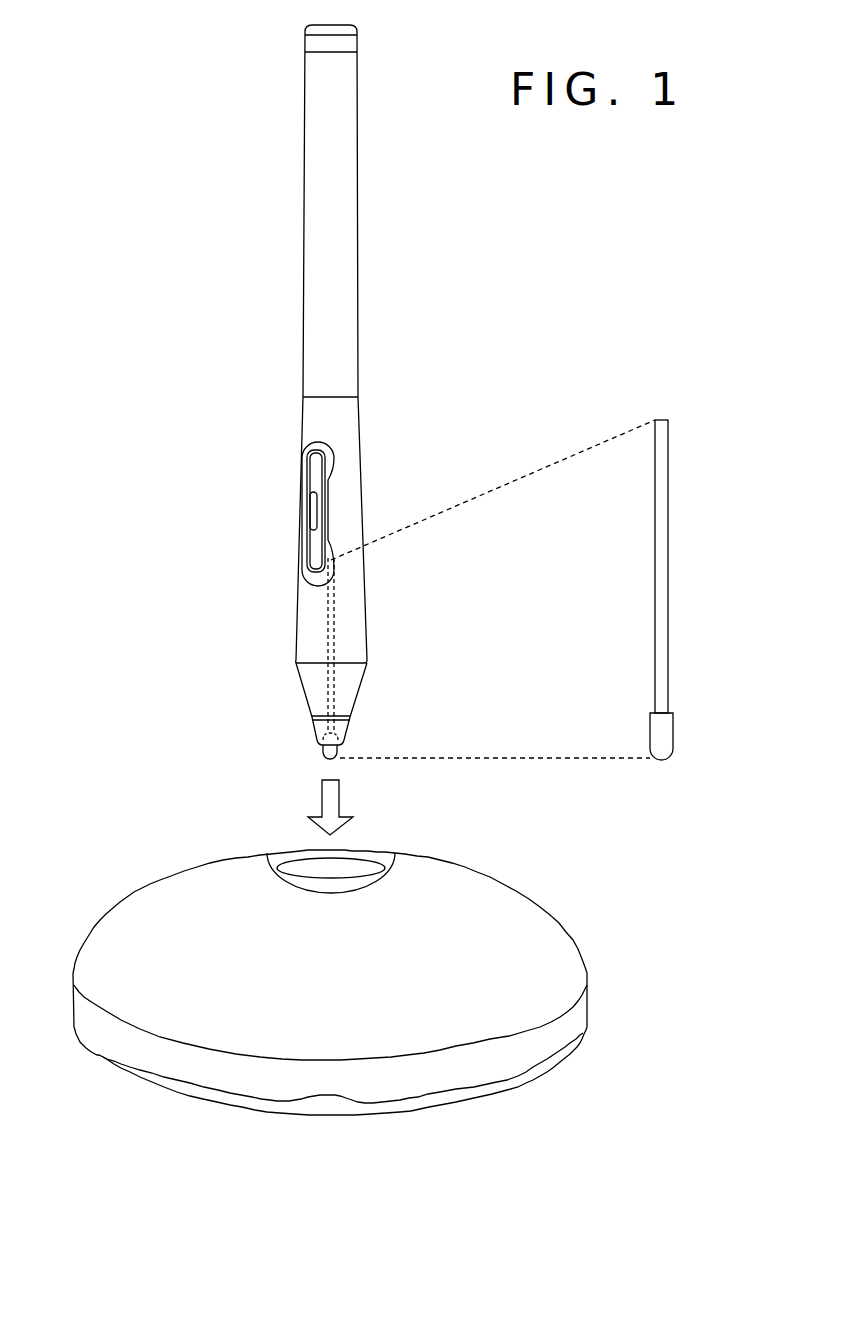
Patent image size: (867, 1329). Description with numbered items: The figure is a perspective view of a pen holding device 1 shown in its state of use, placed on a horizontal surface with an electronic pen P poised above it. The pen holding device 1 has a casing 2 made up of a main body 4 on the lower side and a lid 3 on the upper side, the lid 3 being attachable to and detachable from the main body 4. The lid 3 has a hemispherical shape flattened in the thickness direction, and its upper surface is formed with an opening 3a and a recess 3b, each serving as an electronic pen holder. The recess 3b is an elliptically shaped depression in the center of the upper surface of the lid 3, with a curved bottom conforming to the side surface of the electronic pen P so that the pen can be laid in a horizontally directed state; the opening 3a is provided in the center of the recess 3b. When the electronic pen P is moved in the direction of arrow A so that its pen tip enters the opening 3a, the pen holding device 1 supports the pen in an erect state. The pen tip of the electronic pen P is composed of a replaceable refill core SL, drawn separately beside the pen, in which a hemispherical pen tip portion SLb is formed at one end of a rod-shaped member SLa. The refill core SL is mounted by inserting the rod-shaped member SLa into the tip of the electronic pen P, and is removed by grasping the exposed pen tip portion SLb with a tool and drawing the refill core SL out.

The electronic pen P is at (350, 337).
The refill core SL is at (540, 590).
The rod-shaped member SLa is at (666, 497).
The pen tip portion SLb is at (663, 737).
The arrow A is at (318, 795).
The pen holding device 1 is at (360, 924).
The casing 2 is at (330, 1117).
The lid 3 is at (378, 1082).
The opening 3a is at (368, 863).
The recess 3b is at (308, 885).
The main body 4 is at (397, 1166).